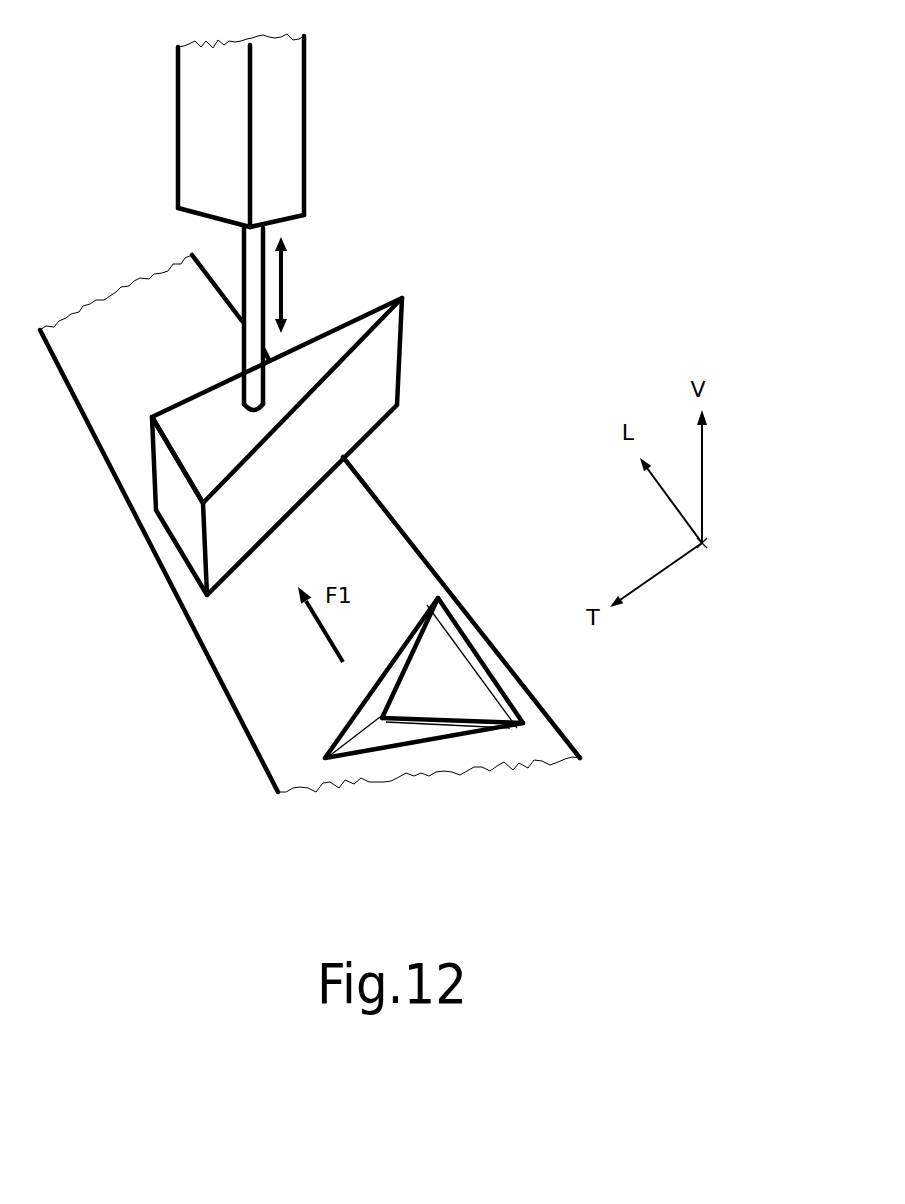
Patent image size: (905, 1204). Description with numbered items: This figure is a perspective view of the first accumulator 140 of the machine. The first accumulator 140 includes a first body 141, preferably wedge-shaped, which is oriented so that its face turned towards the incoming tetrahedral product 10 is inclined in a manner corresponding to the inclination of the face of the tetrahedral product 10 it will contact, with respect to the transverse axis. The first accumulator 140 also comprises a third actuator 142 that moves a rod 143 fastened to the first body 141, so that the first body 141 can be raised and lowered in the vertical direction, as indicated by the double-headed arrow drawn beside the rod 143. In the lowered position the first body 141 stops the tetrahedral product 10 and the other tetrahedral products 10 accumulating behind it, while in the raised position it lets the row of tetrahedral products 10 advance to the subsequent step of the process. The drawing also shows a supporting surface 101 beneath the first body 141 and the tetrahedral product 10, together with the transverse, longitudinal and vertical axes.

The tetrahedral product 10 is at (429, 696).
The support plate 101 is at (112, 348).
The first accumulator 140 is at (414, 101).
The first body 141 is at (284, 456).
The third actuator 142 is at (194, 117).
The rod 143 is at (243, 346).